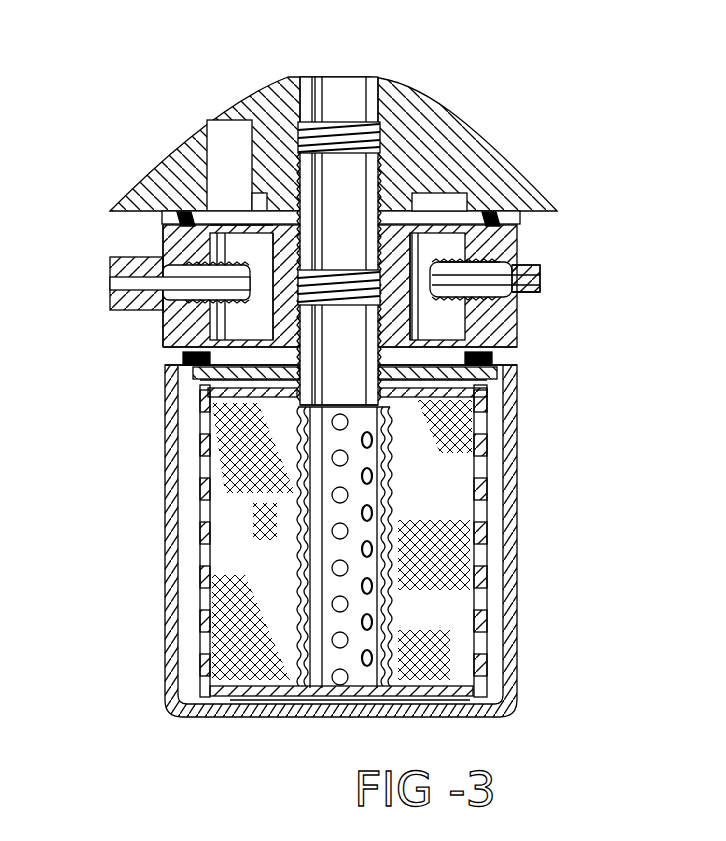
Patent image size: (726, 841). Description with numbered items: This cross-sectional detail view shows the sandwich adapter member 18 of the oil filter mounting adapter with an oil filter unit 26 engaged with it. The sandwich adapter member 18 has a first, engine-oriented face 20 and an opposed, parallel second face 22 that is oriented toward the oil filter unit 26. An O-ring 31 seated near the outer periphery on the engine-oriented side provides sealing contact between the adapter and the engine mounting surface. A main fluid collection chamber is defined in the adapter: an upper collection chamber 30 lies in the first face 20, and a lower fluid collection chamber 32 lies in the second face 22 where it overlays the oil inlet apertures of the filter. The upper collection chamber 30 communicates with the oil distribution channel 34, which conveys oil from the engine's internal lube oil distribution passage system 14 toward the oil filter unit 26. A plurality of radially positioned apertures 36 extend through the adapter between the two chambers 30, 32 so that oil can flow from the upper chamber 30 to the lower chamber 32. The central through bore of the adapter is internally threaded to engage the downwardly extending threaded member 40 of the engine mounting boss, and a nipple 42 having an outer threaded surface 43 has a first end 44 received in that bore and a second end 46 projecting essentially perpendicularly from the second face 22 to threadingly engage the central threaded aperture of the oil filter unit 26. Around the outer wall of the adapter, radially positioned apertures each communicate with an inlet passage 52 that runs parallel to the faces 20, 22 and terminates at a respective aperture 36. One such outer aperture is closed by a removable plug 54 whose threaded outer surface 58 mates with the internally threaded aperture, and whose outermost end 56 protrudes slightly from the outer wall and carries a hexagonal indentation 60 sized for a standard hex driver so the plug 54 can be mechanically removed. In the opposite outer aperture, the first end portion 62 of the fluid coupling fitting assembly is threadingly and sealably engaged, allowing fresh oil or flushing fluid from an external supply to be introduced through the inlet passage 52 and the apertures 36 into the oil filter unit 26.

The internal lube oil distribution passage system 14 is at (347, 88).
The sandwich adapter member 18 is at (160, 237).
The first, engine-oriented face 20 is at (500, 235).
The second face 22 is at (510, 368).
The oil filter unit 26 is at (520, 645).
The upper collection chamber 30 is at (270, 225).
The O-ring 31 is at (183, 213).
The lower fluid collection chamber 32 is at (255, 378).
The oil distribution channel 34 is at (246, 163).
The apertures 36 is at (440, 240).
The downwardly extending threaded member 40 is at (380, 157).
The nipple 42 is at (392, 425).
The outer threaded surface 43 is at (290, 300).
The first end 44 is at (390, 405).
The second end 46 is at (297, 430).
The inlet passage 52 is at (167, 307).
The removable plug 54 is at (540, 262).
The outermost end 56 is at (537, 267).
The screw thread 58 is at (523, 262).
The hexagonal indentation 60 is at (545, 280).
The first end portion 62 is at (163, 253).